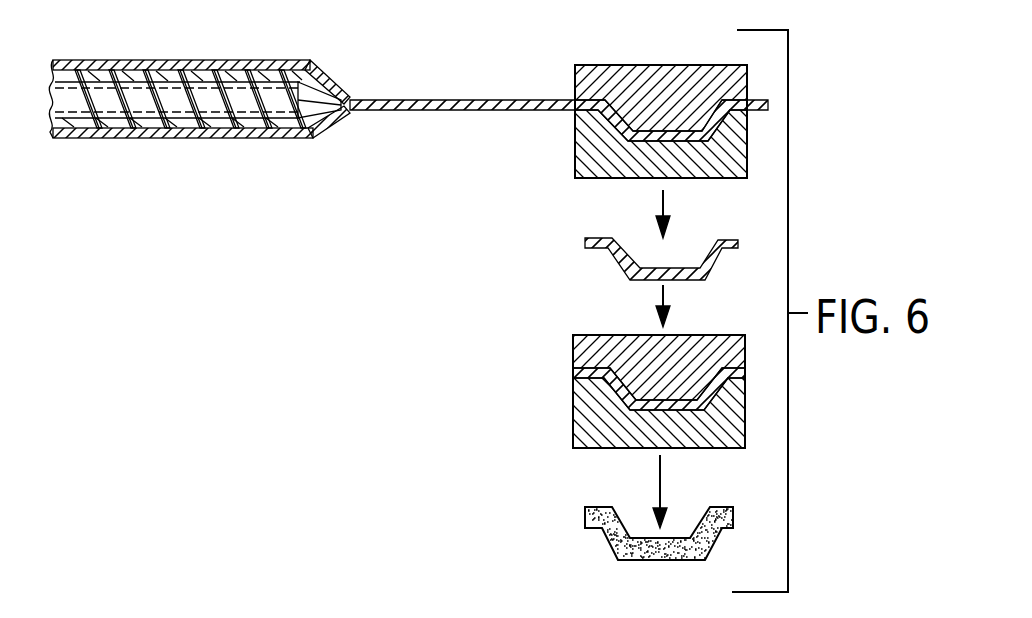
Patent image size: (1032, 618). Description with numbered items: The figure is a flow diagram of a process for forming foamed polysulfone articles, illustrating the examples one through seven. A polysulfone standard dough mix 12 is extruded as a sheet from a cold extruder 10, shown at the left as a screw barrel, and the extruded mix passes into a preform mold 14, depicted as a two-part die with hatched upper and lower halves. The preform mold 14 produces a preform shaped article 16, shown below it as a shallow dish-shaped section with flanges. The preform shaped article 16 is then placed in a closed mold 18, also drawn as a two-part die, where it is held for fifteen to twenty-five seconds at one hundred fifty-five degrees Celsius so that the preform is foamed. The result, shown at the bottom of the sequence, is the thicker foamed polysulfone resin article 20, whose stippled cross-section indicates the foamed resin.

The cold extruder 10 is at (255, 58).
The polysulfone standard dough mix 12 is at (448, 111).
The preform mold 14 is at (576, 80).
The preform shaped article 16 is at (578, 238).
The closed mold 18 is at (566, 329).
The foamed polysulfone resin article 20 is at (586, 507).